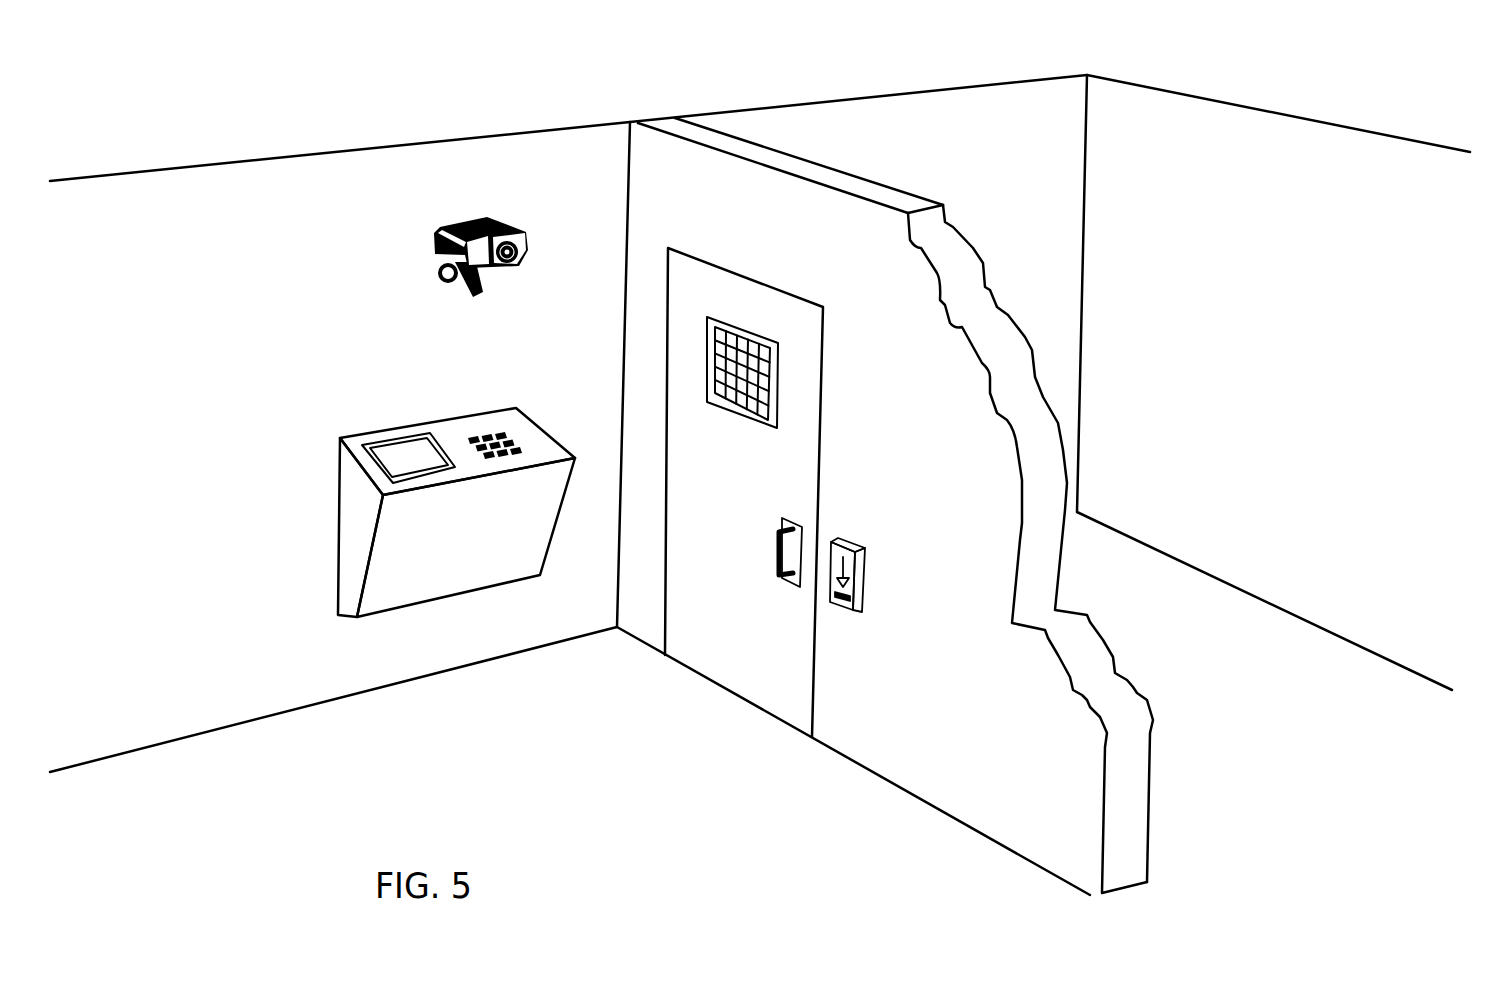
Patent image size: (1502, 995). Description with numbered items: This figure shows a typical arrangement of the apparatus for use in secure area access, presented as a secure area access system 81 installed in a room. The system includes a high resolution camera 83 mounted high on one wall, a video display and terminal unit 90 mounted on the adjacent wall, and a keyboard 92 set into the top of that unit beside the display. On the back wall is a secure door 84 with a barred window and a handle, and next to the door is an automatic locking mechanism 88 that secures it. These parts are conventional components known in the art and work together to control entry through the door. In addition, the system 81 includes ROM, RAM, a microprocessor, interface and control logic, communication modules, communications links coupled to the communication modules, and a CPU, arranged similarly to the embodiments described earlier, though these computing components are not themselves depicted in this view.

The secure area access system 81 is at (1000, 138).
The high resolution camera 83 is at (481, 228).
The secure door 84 is at (730, 305).
The automatic locking mechanism 88 is at (868, 552).
The video display and terminal unit 90 is at (390, 450).
The keyboard 92 is at (497, 437).